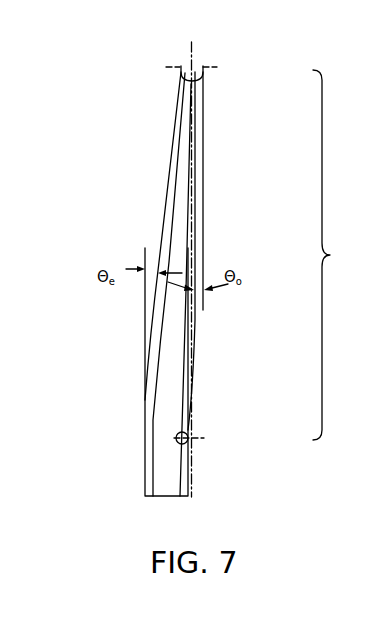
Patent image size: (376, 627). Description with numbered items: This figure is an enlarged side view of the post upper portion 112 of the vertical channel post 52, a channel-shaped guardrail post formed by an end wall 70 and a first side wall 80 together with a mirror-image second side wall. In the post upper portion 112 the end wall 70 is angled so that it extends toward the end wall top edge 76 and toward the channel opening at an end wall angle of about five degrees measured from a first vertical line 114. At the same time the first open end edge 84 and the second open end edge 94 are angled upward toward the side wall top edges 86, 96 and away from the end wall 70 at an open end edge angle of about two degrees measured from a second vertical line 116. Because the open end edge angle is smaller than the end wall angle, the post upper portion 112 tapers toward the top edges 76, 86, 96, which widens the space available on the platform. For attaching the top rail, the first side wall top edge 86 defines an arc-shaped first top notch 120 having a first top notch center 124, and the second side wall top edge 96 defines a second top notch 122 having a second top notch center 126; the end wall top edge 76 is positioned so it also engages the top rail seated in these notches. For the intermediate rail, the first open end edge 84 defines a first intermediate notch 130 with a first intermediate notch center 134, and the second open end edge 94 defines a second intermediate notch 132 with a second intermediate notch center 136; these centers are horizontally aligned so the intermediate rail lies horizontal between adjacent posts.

The vertical channel post 52 is at (126, 122).
The end wall 70 is at (144, 470).
The end wall top edge 76 is at (166, 67).
The first side wall 80 is at (163, 452).
The first open end edge 84 is at (231, 251).
The second open end edge 94 is at (205, 91).
The first side wall top edge 86 is at (255, 73).
The second side wall top edge 96 is at (255, 73).
The post upper portion 112 is at (337, 255).
The first vertical line 114 is at (151, 321).
The second vertical line 116 is at (206, 193).
The first top notch 120 is at (255, 73).
The second top notch 122 is at (217, 67).
The first top notch center 124 is at (230, 58).
The second top notch center 126 is at (197, 66).
The first intermediate notch 130 is at (232, 451).
The second intermediate notch 132 is at (188, 443).
The first intermediate notch center 134 is at (225, 419).
The second intermediate notch center 136 is at (238, 417).